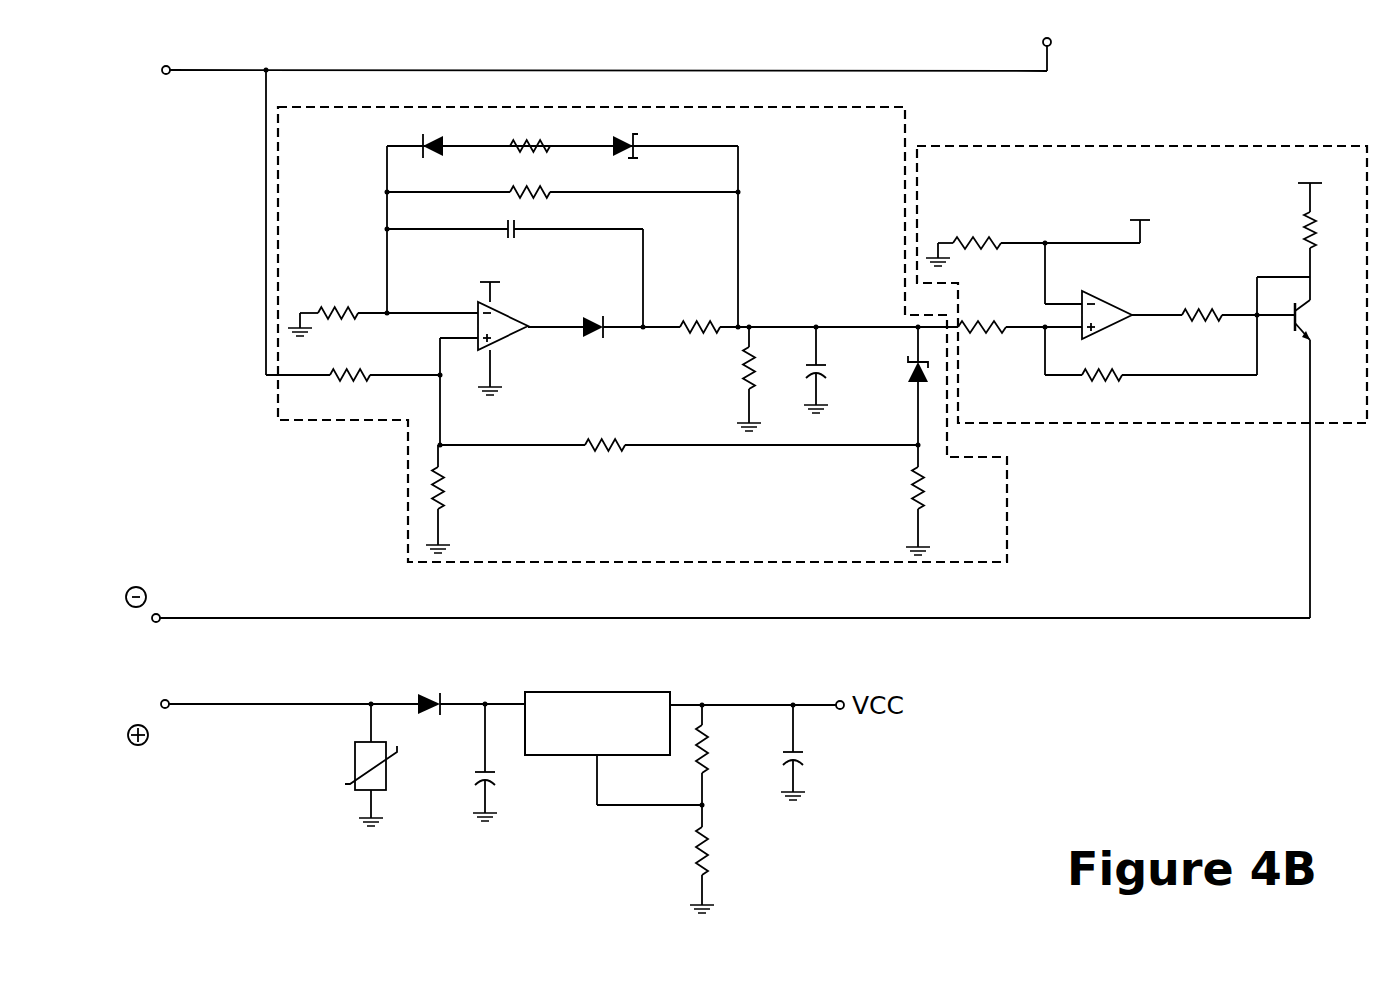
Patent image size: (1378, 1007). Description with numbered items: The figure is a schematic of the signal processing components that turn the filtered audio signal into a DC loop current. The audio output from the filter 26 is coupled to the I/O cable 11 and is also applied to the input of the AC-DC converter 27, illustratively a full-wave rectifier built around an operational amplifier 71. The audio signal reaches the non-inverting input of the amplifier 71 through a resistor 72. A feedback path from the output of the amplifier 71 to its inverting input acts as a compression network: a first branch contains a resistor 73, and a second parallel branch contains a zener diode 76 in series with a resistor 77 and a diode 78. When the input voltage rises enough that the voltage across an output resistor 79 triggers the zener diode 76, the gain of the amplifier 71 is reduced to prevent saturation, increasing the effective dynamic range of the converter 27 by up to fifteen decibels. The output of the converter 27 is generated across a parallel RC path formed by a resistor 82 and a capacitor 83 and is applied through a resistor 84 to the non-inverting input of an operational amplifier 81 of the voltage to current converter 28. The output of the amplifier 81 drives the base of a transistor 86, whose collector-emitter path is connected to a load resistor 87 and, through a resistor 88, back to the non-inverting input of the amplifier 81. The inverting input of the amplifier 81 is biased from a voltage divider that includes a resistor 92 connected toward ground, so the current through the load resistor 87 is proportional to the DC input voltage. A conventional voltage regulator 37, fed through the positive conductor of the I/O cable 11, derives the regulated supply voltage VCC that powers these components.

The I/O cable 11 is at (126, 394).
The filter 26 is at (1126, 47).
The AC-DC converter 27 is at (1007, 460).
The voltage to current converter 28 is at (1163, 424).
The voltage regulator 37 is at (686, 682).
The operational amplifier 71 is at (514, 336).
The resistor 72 is at (352, 380).
The resistor 73 is at (552, 196).
The zener diode 76 is at (642, 158).
The resistor 77 is at (545, 150).
The diode 78 is at (444, 158).
The output resistor 79 is at (710, 320).
The operational amplifier 81 is at (1116, 330).
The resistor 82 is at (746, 375).
The capacitor 83 is at (805, 363).
The resistor 84 is at (982, 333).
The transistor 86 is at (1303, 318).
The load resistor 87 is at (1312, 250).
The resistor 88 is at (1108, 380).
The resistor 92 is at (986, 228).